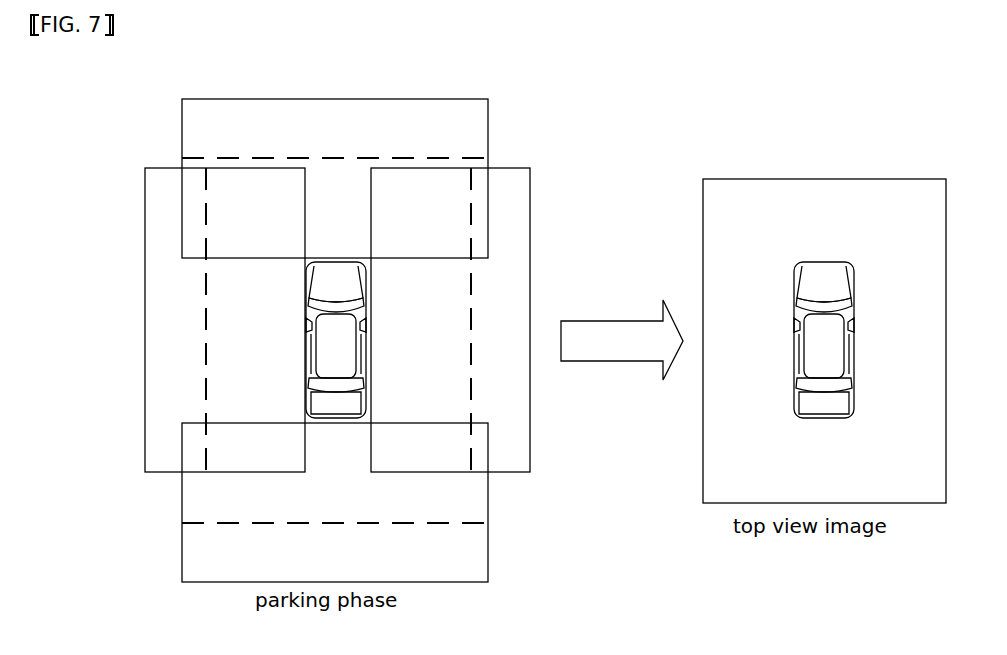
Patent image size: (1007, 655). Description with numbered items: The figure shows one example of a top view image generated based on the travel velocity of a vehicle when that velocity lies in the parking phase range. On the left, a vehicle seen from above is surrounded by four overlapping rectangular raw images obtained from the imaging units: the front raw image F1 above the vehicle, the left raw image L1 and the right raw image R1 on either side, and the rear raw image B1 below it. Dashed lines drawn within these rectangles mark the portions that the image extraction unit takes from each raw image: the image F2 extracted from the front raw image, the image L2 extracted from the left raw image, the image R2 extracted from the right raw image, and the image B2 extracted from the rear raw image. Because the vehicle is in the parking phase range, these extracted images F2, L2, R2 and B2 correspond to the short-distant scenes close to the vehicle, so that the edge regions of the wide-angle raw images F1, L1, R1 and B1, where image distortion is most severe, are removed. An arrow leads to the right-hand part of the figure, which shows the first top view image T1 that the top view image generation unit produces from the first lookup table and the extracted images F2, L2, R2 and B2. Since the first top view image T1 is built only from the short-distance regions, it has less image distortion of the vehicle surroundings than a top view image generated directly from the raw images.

The front raw image F1 is at (384, 99).
The image extracted from the front raw image F2 is at (422, 158).
The left raw image L1 is at (152, 168).
The image extracted from the left raw image L2 is at (206, 300).
The right raw image R1 is at (516, 168).
The image extracted from the right raw image R2 is at (472, 331).
The rear raw image B1 is at (488, 566).
The image extracted from the rear raw image B2 is at (488, 510).
The first top view image T1 is at (906, 179).